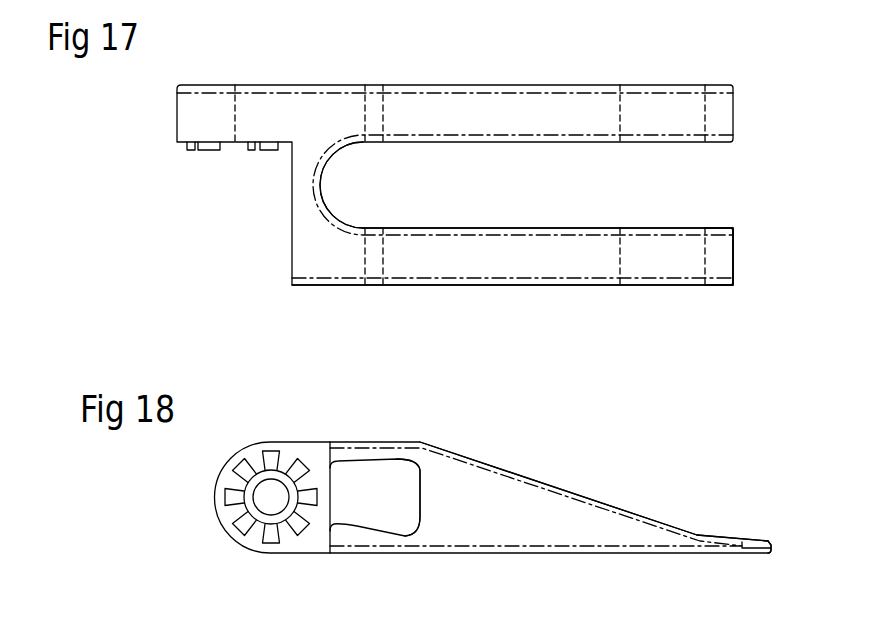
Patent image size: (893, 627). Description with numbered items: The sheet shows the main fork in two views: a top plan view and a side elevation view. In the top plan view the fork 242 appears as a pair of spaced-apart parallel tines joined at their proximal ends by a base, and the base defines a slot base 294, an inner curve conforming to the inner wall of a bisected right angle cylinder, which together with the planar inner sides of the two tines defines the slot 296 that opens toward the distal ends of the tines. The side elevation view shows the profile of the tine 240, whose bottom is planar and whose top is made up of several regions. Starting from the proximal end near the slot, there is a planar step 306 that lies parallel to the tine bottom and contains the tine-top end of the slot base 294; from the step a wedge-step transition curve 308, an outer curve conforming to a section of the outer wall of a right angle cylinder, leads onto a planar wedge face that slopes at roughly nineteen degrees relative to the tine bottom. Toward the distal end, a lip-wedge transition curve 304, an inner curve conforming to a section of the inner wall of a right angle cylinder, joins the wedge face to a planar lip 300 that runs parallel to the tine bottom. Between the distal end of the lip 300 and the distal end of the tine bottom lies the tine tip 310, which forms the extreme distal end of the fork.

In FIG. 18, the arm 240 is at (443, 553).
In FIG. 17, the bracket 242 is at (519, 108).
In FIG. 17, the slot base 294 is at (321, 182).
In FIG. 17, the slot 296 is at (508, 194).
In FIG. 17, the lip 300 is at (716, 262).
In FIG. 18, the lip 300 is at (756, 543).
In FIG. 17, the lip-wedge transition curve 304 is at (557, 257).
In FIG. 18, the lip-wedge transition curve 304 is at (697, 535).
In FIG. 17, the step 306 is at (332, 262).
In FIG. 18, the step 306 is at (370, 440).
In FIG. 17, the wedge-step transition curve 308 is at (373, 262).
In FIG. 18, the wedge-step transition curve 308 is at (413, 443).
In FIG. 17, the tine tip 310 is at (735, 272).
In FIG. 18, the tine tip 310 is at (777, 542).